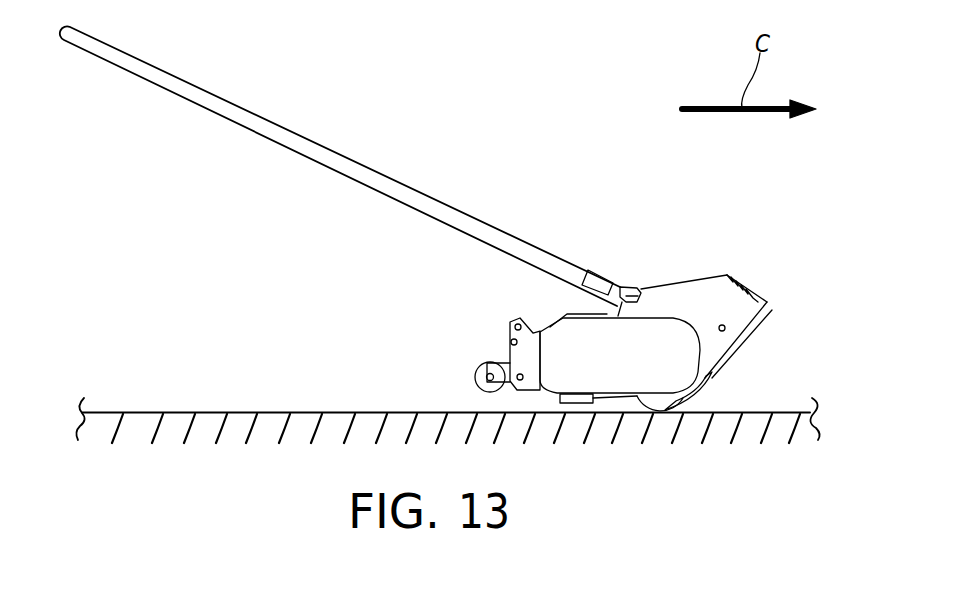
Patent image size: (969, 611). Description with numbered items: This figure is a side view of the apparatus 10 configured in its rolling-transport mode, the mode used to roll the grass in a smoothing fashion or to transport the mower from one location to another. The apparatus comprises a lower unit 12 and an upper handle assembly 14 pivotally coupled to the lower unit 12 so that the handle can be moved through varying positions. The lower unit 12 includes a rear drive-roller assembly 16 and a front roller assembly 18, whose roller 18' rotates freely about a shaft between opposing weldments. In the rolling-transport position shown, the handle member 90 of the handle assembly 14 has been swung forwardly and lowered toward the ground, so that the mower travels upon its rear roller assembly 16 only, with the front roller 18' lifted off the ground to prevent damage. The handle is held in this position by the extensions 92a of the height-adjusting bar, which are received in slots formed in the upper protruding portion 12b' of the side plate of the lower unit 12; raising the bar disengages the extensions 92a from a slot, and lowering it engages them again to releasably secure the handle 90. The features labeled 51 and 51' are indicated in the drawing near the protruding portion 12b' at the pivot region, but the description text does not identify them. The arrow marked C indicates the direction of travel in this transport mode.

The apparatus 10 is at (584, 124).
The lower unit 12 is at (783, 332).
The upper protruding portion of side plate 12b' is at (737, 253).
The handle assembly 14 is at (163, 96).
The rear drive-roller assembly 16 is at (703, 397).
The front roller assembly 18 is at (466, 357).
The roller 18' is at (501, 348).
The hinge 51 is at (757, 269).
The hinge pin 51' is at (799, 286).
The handle member 90 is at (553, 263).
The extensions of bar 92a is at (627, 287).